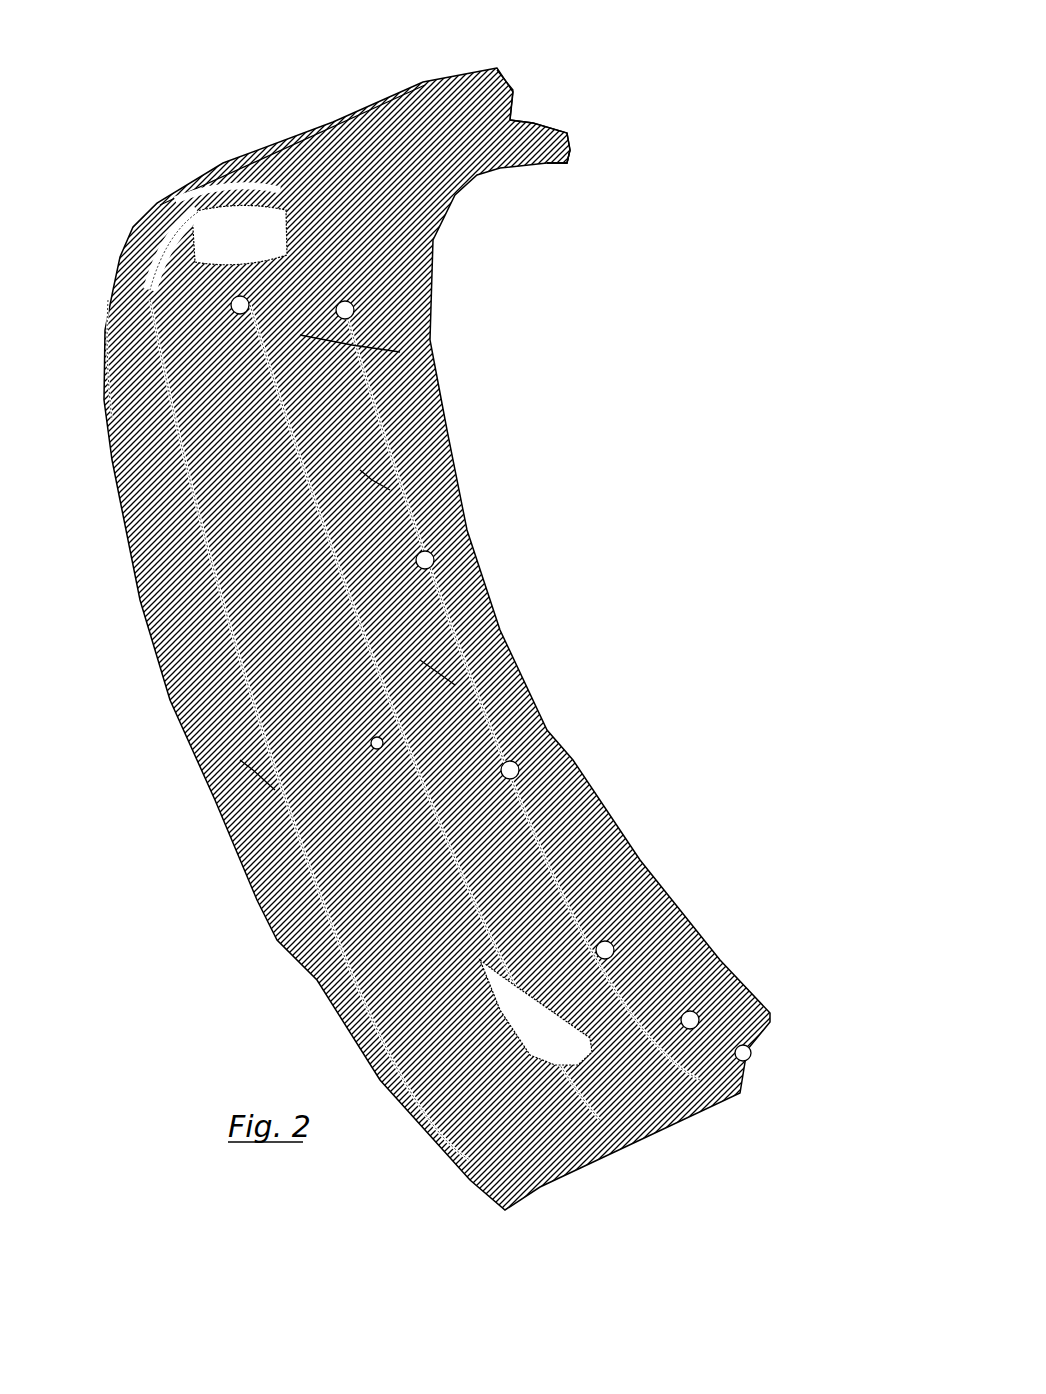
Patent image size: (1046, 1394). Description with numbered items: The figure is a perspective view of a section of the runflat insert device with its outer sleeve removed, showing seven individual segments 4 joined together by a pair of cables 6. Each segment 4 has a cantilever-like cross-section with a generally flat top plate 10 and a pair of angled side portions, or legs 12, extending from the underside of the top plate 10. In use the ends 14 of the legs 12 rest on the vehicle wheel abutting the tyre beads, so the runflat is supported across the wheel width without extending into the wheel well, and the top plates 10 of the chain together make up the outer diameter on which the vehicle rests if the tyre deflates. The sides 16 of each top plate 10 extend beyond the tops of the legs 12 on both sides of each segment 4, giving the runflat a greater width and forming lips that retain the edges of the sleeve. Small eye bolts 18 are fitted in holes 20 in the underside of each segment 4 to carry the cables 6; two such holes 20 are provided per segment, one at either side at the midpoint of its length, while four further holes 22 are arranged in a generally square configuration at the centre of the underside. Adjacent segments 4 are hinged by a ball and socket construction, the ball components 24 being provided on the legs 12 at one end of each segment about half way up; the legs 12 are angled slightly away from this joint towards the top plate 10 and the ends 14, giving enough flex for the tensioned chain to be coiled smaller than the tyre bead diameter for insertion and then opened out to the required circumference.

The top plate 10 is at (328, 132).
The sides of top plate 16 is at (513, 90).
The legs 12 is at (525, 137).
The ends of legs 14 is at (570, 148).
The cables 6 is at (352, 345).
The eye bolts 18 is at (437, 672).
The further holes 22 is at (377, 743).
The eye bolt holes 20 is at (253, 770).
The segments 4 is at (120, 372).
The ball components 24 is at (743, 1053).